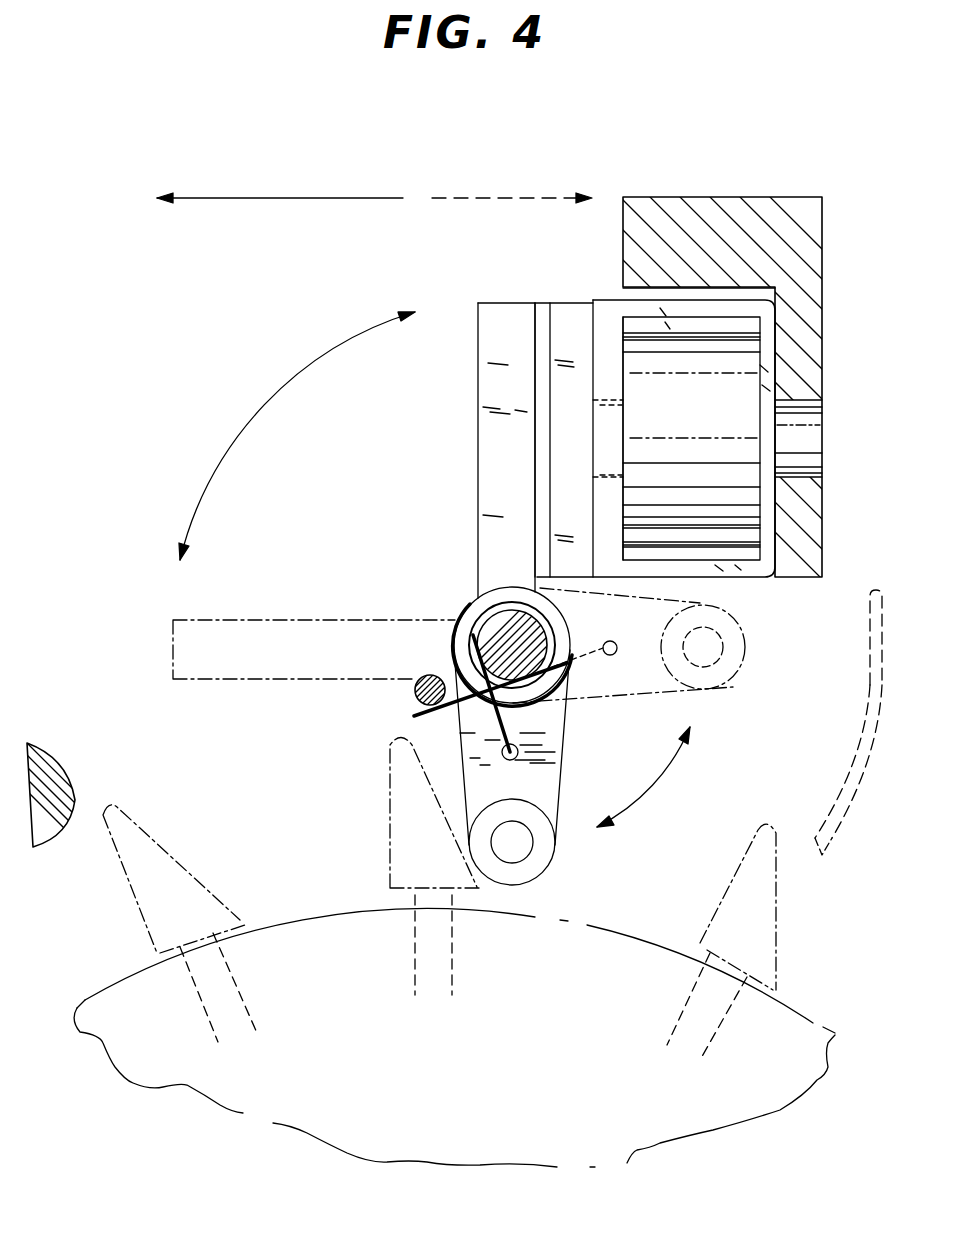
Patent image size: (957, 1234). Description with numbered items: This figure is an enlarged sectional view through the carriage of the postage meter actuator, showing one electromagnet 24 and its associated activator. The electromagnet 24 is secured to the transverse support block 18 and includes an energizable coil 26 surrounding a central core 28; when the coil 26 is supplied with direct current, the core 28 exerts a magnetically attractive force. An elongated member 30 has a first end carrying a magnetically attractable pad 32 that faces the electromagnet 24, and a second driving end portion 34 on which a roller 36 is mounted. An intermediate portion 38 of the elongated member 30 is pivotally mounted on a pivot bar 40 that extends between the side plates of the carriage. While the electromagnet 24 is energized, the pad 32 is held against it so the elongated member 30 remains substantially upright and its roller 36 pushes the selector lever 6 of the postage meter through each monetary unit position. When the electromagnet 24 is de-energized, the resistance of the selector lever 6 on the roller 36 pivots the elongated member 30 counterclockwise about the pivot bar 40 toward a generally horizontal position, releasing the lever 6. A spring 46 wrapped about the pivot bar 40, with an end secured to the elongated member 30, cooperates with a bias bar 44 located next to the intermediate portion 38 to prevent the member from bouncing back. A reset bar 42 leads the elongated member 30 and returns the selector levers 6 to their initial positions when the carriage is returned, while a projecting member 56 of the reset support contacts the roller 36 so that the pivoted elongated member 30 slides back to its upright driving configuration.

The selector lever 6 is at (390, 828).
The support block 18 is at (702, 195).
The electromagnet 24 is at (603, 300).
The coil 26 is at (735, 522).
The core 28 is at (620, 410).
The elongated member 30 is at (483, 462).
The magnetically attractable pad 32 is at (560, 300).
The driving end portion 34 is at (560, 737).
The roller 36 is at (550, 872).
The intermediate portion 38 is at (473, 597).
The pivot bar 40 is at (505, 635).
The reset bar 42 is at (65, 785).
The bias bar 44 is at (415, 697).
The spring 46 is at (500, 742).
The projecting member 56 is at (843, 812).